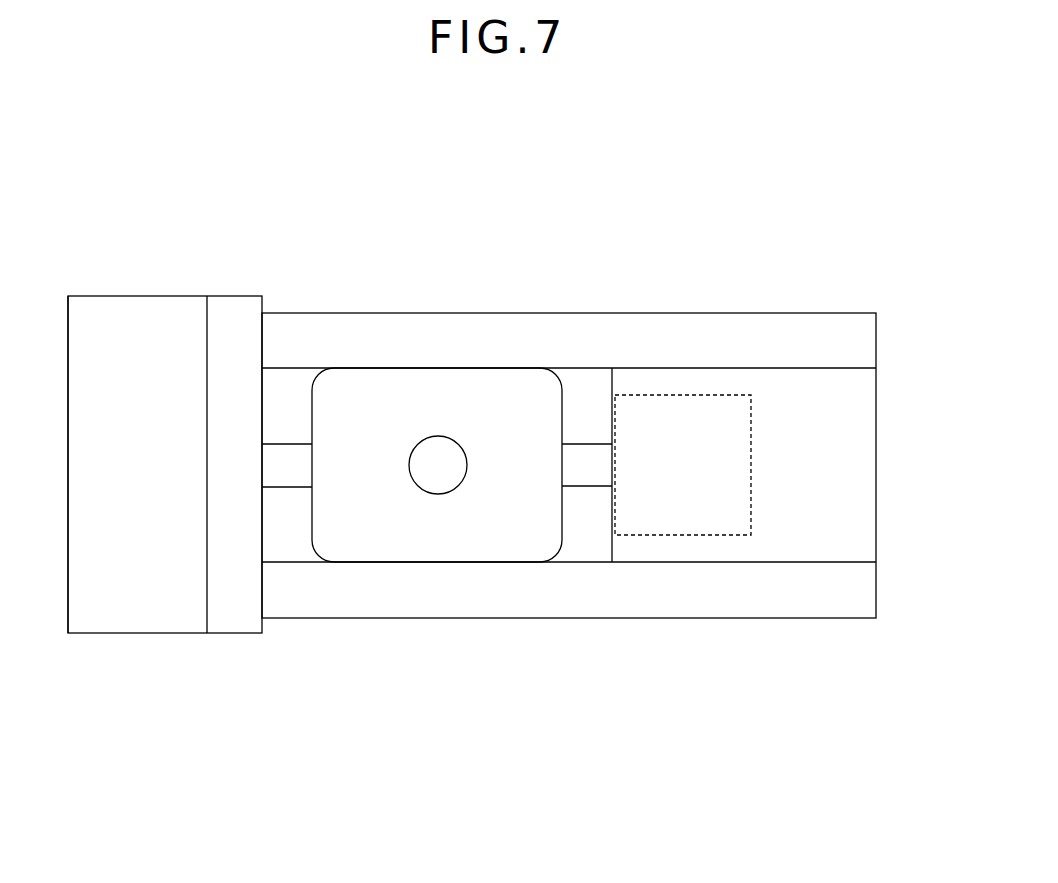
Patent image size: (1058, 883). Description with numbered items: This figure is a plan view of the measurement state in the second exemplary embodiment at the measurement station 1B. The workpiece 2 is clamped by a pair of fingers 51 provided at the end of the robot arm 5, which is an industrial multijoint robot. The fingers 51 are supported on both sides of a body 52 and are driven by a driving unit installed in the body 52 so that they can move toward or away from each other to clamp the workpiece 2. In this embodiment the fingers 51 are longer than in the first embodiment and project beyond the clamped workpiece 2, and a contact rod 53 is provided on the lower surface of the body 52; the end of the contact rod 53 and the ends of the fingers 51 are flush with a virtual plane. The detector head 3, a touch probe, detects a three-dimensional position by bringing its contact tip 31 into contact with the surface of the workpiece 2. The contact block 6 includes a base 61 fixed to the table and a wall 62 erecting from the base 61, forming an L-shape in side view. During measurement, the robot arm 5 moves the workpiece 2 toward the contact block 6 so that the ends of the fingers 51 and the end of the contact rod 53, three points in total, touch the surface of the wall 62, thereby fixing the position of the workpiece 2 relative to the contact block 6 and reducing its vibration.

The measurement station 1B is at (660, 199).
The workpiece 2 is at (370, 368).
The detector head 3 is at (377, 683).
The contact tip 31 is at (438, 494).
The robot arm 5 is at (882, 308).
The fingers 51 is at (675, 313).
The body 52 is at (857, 470).
The contact rod 53 is at (297, 488).
The contact block 6 is at (133, 288).
The base 61 is at (128, 633).
The wall 62 is at (223, 633).